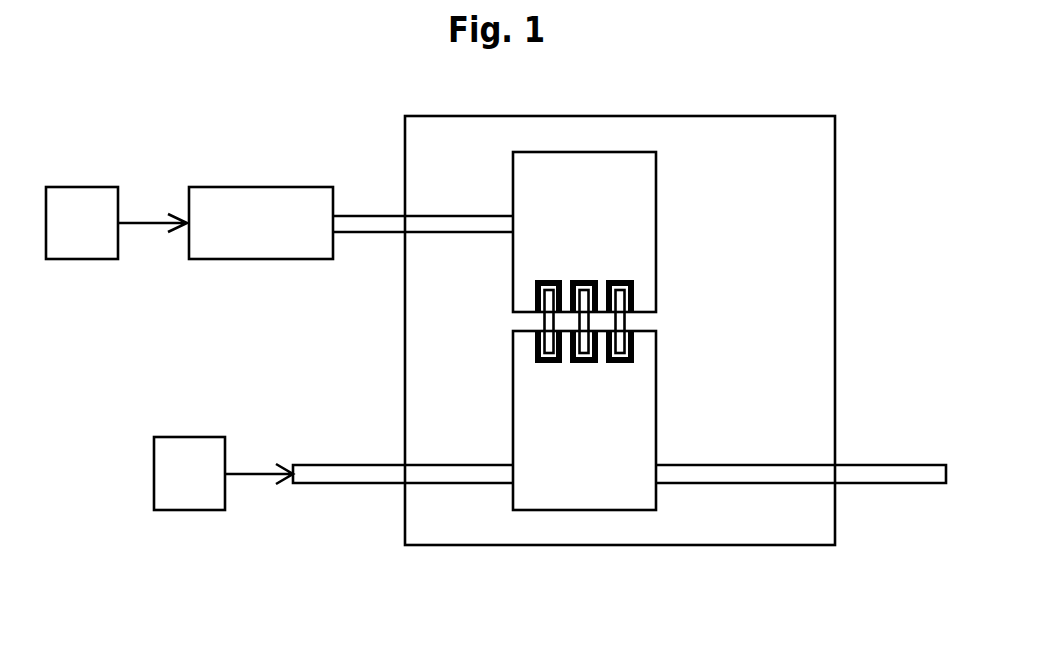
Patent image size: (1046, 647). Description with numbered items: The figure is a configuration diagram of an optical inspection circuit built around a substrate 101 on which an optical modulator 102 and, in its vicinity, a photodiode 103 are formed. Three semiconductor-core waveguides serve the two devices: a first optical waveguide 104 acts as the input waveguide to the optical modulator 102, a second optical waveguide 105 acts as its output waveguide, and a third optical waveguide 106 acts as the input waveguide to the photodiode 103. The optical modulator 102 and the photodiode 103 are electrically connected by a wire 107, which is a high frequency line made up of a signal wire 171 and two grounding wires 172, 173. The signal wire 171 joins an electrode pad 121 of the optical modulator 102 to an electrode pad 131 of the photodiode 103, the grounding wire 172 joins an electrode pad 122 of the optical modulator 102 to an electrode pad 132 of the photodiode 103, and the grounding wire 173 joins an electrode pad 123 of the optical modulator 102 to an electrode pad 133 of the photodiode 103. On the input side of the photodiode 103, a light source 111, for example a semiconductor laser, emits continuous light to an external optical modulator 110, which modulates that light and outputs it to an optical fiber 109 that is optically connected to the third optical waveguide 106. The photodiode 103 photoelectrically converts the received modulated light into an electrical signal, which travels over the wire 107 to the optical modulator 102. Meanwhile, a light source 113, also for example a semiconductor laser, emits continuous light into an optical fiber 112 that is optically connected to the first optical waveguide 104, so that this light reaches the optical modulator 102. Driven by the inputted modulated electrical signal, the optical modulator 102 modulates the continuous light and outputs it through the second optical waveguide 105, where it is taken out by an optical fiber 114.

The substrate 101 is at (838, 130).
The optical modulator 102 is at (585, 512).
The photodiode 103 is at (585, 150).
The first optical waveguide 104 is at (456, 486).
The second optical waveguide 105 is at (795, 463).
The third optical waveguide 106 is at (453, 213).
The wire 107 is at (647, 327).
The optical fiber 109 is at (365, 236).
The optical modulator 110 is at (261, 186).
The light source 111 is at (82, 186).
The optical fiber 112 is at (345, 463).
The light source 113 is at (190, 435).
The optical fiber 114 is at (882, 463).
The electrode pad 121 is at (585, 363).
The electrode pad 122 is at (550, 363).
The electrode pad 123 is at (620, 363).
The electrode pad 131 is at (586, 280).
The electrode pad 132 is at (550, 280).
The electrode pad 133 is at (620, 280).
The signal wire 171 is at (557, 320).
The grounding wire 172 is at (540, 302).
The grounding wire 173 is at (542, 341).